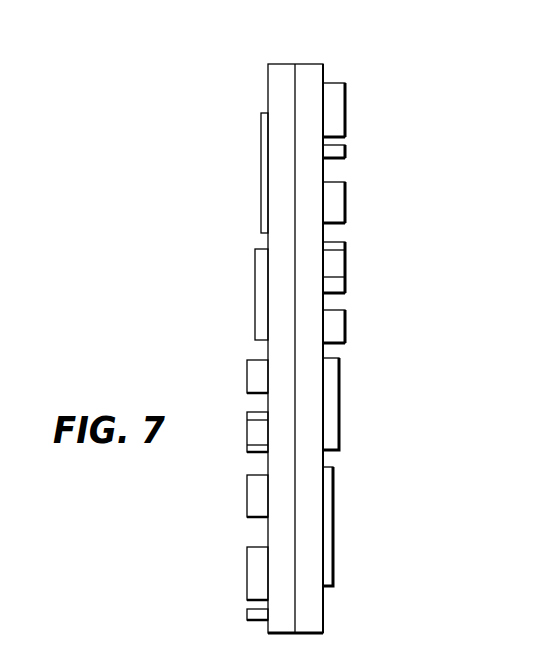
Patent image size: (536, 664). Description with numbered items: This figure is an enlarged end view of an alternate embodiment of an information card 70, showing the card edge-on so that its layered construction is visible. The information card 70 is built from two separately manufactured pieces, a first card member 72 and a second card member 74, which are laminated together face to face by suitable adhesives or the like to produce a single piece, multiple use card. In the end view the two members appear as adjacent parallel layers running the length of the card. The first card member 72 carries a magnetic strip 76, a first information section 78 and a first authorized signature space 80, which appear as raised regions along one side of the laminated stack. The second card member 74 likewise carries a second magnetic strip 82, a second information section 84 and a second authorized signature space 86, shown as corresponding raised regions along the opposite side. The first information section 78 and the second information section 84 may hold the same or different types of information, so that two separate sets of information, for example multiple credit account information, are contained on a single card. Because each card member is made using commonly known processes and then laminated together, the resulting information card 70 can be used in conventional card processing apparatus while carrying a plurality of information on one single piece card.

The information card 70 is at (156, 84).
The first card member 72 is at (268, 64).
The second card member 74 is at (305, 65).
The magnetic strip 76 is at (261, 167).
The first information section 78 is at (220, 355).
The first authorized signature space 80 is at (255, 306).
The second magnetic strip 82 is at (333, 576).
The second information section 84 is at (370, 83).
The second authorized signature space 86 is at (339, 399).